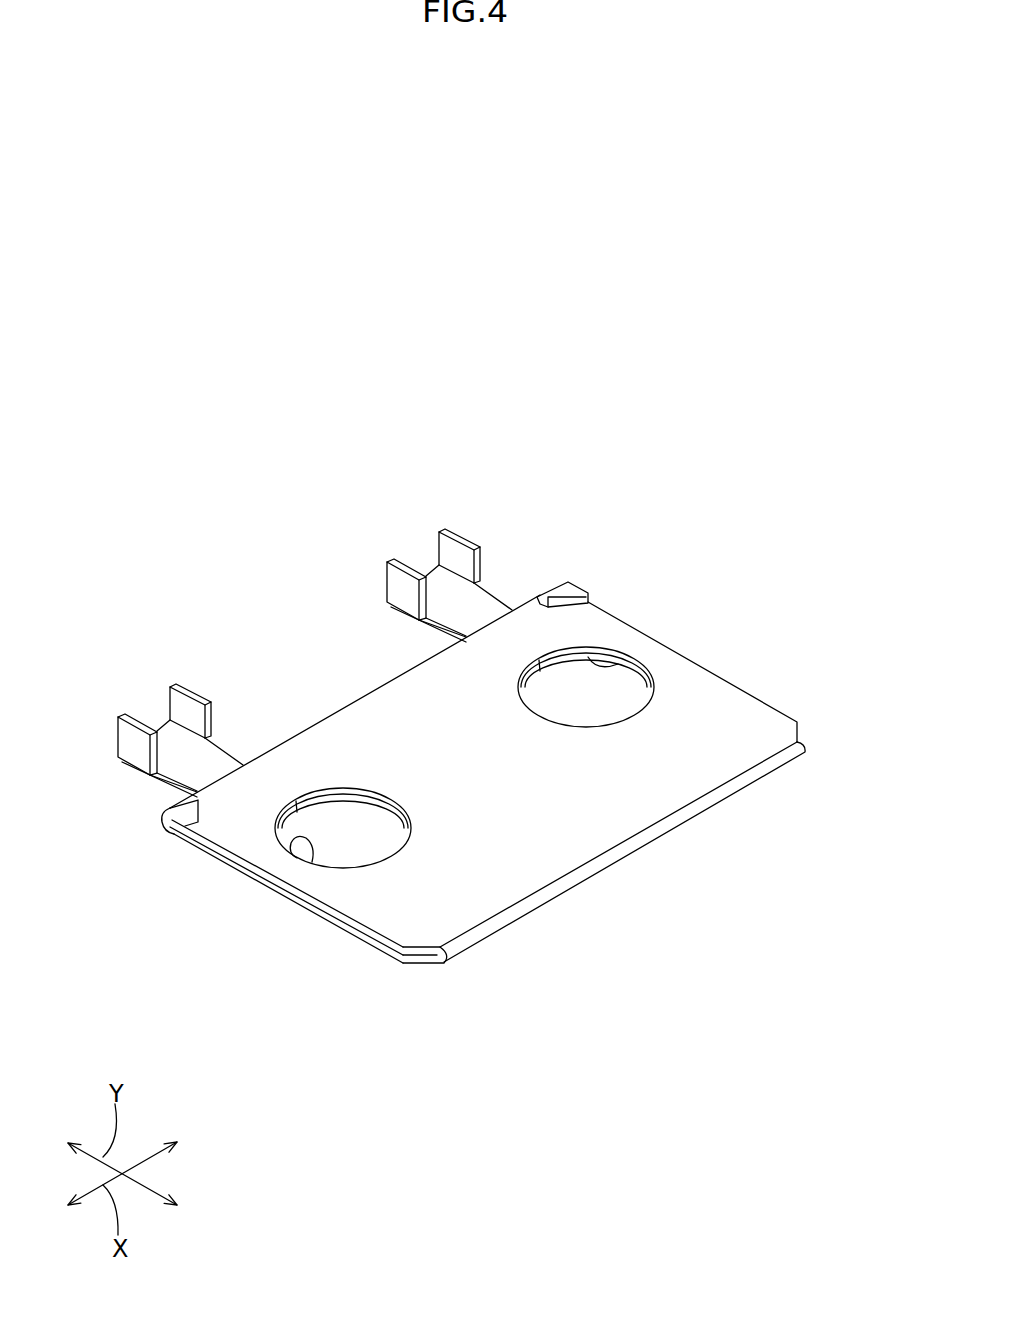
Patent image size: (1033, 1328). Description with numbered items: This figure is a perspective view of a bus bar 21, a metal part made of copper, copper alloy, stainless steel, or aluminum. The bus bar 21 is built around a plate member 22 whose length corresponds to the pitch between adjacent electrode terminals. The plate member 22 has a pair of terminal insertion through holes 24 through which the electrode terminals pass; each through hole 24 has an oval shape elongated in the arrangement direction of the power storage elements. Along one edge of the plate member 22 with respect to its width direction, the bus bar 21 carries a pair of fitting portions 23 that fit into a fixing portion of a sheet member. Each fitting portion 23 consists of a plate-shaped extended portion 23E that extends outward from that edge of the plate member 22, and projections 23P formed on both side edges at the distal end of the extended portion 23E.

The bus bar 21 is at (581, 498).
The plate member 22 is at (598, 832).
The fitting portion 23 is at (484, 589).
The projection 23P is at (447, 528).
The extended portion 23E is at (485, 602).
The terminal insertion through hole 24 is at (590, 660).